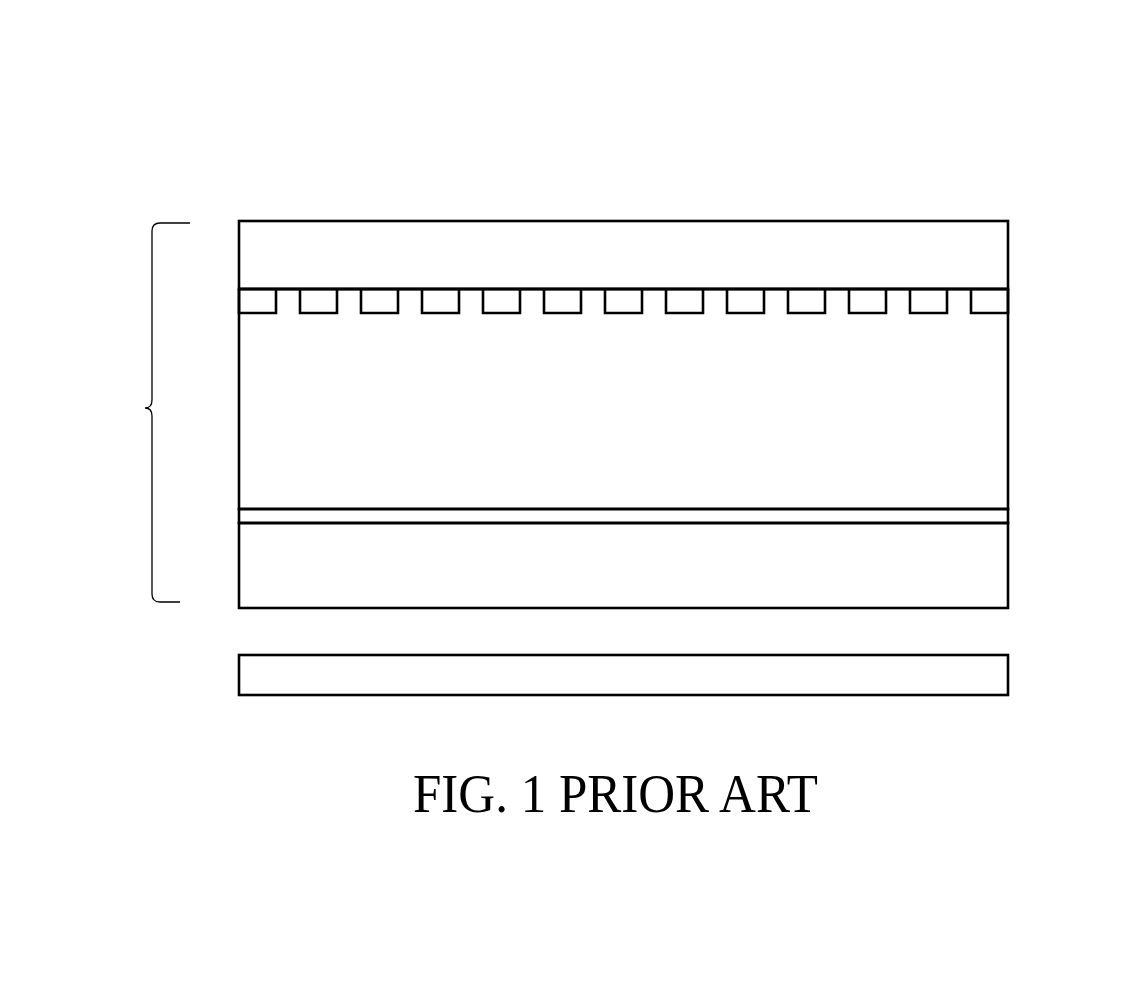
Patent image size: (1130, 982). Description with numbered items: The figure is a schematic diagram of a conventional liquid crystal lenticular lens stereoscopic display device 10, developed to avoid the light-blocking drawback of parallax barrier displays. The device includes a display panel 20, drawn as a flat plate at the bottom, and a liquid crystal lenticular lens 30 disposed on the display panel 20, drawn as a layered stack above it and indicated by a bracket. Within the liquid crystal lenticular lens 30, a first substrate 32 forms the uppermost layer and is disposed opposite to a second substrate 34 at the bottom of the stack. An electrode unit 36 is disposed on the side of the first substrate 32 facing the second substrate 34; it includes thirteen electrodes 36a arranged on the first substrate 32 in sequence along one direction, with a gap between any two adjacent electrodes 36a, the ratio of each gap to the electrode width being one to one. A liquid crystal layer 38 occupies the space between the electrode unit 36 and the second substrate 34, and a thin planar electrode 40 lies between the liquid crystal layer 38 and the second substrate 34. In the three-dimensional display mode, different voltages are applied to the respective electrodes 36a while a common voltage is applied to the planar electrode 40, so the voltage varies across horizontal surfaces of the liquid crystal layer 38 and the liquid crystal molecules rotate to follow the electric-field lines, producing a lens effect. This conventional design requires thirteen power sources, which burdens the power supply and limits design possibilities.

The display device (prior art) 10 is at (975, 92).
The display panel 20 is at (256, 679).
The liquid crystal lenticular lens 30 is at (145, 408).
The first substrate 32 is at (258, 254).
The second substrate 34 is at (256, 576).
The electrode unit 36 is at (1012, 303).
The electrodes 36a is at (988, 365).
The liquid crystal layer 38 is at (256, 454).
The planar electrode 40 is at (256, 517).